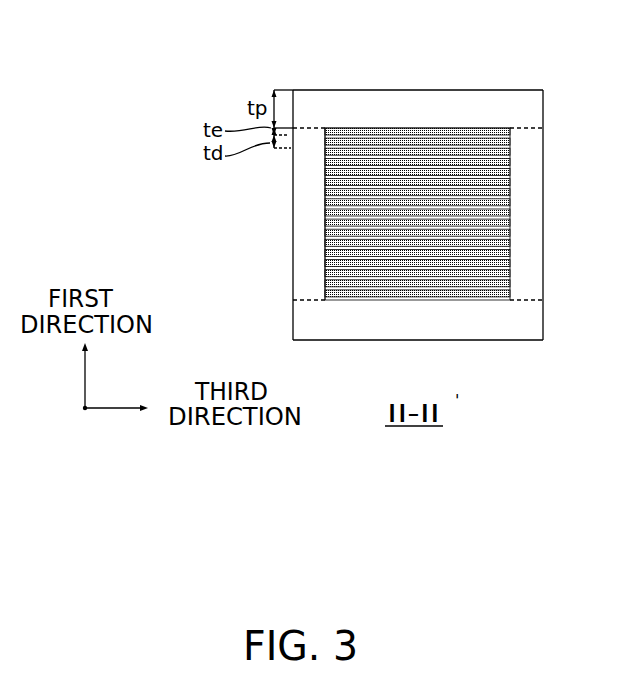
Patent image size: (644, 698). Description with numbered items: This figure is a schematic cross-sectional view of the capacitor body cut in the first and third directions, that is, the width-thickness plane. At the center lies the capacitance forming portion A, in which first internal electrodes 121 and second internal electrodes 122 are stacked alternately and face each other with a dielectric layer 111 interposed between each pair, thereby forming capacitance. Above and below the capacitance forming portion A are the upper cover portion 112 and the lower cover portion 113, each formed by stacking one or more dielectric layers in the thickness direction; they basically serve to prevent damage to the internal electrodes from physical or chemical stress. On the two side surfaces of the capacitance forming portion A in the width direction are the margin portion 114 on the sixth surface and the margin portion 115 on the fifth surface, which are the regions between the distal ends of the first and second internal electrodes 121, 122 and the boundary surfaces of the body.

The dielectric layer 111 is at (512, 137).
The upper cover portion 112 is at (423, 105).
The lower cover portion 113 is at (537, 318).
The margin portion 114 is at (310, 252).
The margin portion 115 is at (537, 240).
The first internal electrode 121 is at (510, 129).
The second internal electrode 122 is at (510, 142).
The capacitance forming portion A is at (318, 219).